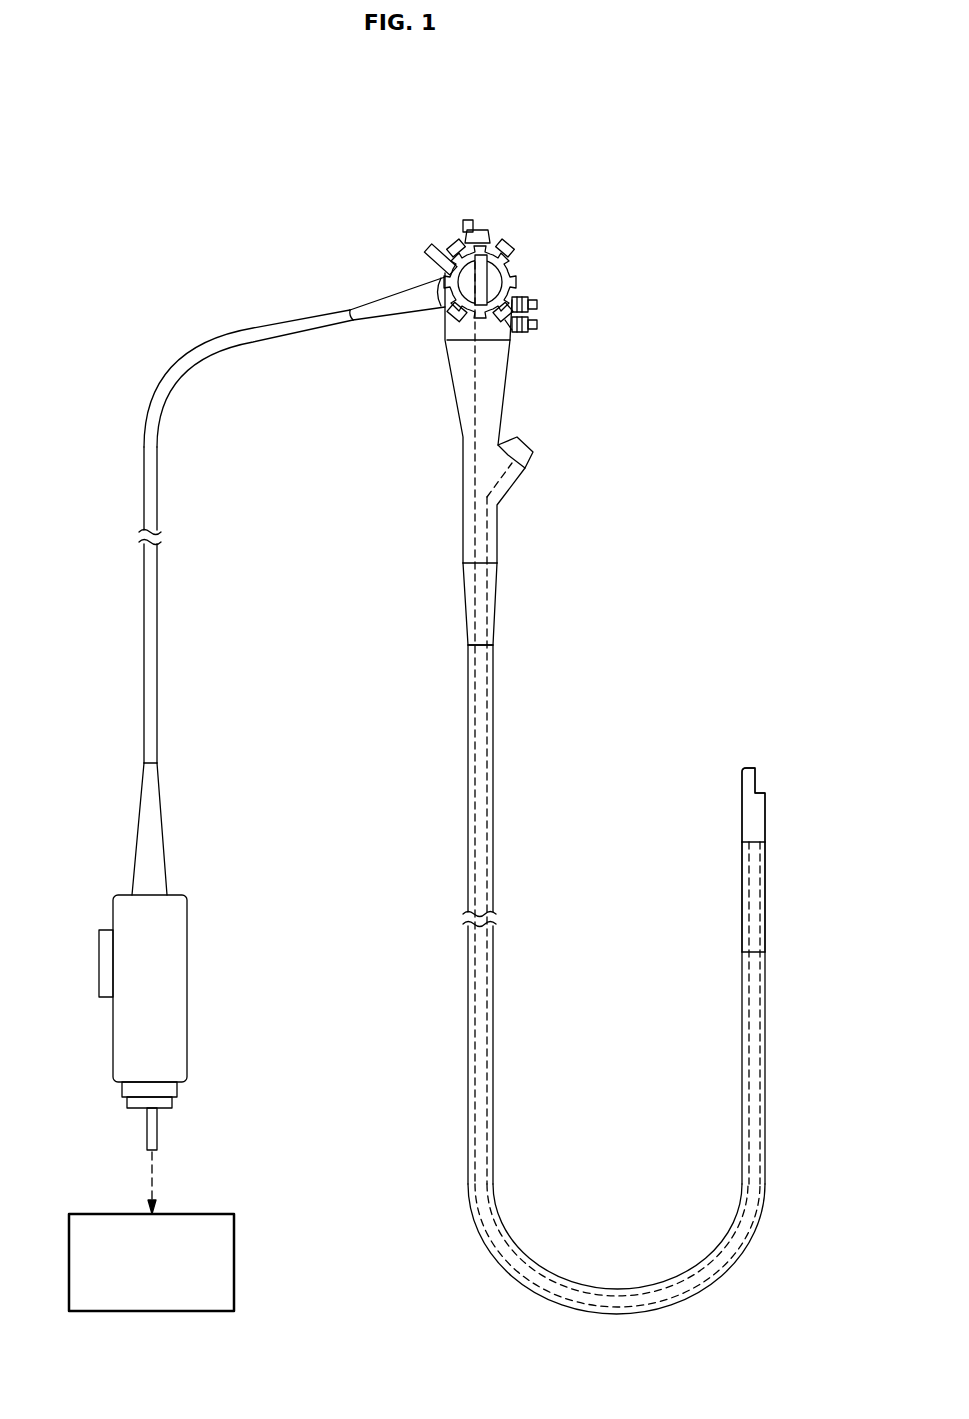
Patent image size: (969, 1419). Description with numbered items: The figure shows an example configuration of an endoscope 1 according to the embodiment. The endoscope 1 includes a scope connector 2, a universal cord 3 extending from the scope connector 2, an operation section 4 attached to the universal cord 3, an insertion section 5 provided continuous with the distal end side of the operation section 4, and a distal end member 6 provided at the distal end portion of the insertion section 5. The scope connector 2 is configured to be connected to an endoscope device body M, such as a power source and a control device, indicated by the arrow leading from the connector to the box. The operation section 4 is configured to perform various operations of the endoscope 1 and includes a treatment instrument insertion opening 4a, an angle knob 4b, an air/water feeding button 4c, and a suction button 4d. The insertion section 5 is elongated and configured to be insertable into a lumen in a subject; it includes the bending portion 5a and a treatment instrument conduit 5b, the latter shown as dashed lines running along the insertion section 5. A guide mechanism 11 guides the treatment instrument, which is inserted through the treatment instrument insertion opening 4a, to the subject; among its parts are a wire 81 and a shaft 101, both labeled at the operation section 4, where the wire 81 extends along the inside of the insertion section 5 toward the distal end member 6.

The endoscope 1 is at (183, 366).
The scope connector 2 is at (187, 985).
The universal cord 3 is at (157, 605).
The operation section 4 is at (505, 385).
The treatment instrument insertion opening 4a is at (530, 442).
The angle knob 4b is at (516, 331).
The air/water feeding button 4c is at (538, 325).
The suction button 4d is at (538, 303).
The insertion section 5 is at (767, 1080).
The bending portion 5a is at (767, 888).
The treatment instrument conduit 5b is at (491, 657).
The distal end member 6 is at (767, 808).
The guide mechanism 11 is at (469, 697).
The wire 81 is at (468, 218).
The shaft 101 is at (432, 246).
The endoscope device body M is at (234, 1258).